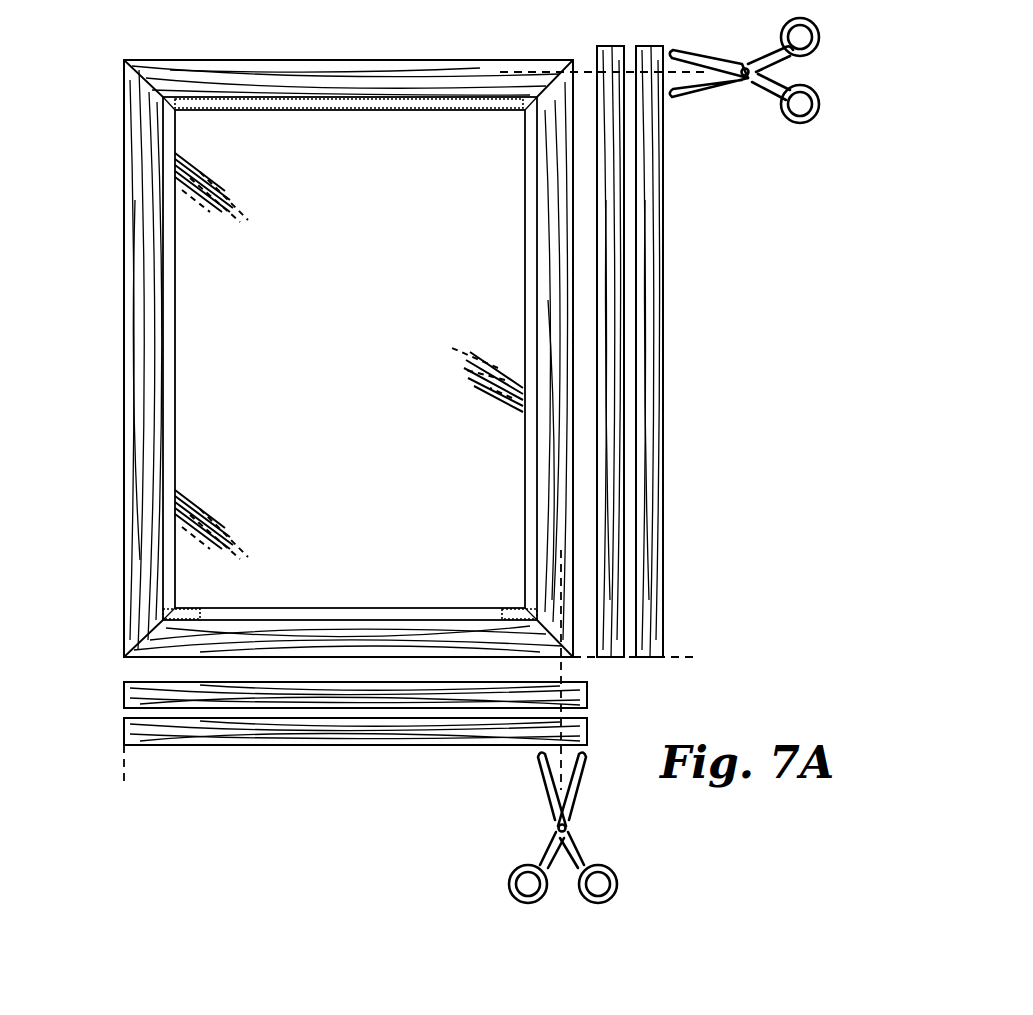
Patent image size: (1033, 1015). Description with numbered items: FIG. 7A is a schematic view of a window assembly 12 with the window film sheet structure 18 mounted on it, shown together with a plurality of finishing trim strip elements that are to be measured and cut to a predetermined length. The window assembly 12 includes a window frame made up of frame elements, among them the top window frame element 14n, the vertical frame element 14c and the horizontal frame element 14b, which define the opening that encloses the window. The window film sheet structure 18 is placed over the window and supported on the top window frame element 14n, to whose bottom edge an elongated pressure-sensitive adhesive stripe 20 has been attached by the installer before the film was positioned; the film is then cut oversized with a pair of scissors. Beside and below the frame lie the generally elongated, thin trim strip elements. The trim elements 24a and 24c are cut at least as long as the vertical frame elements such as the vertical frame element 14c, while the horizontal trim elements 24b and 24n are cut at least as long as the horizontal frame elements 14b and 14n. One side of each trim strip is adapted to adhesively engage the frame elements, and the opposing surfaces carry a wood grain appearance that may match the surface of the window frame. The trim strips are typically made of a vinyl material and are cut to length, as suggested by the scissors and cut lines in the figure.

The window assembly 12 is at (106, 233).
The top window frame element 14n is at (302, 60).
The vertical frame element 14c is at (123, 442).
The horizontal frame element 14b is at (178, 657).
The window film sheet structure 18 is at (352, 407).
The pressure-sensitive adhesive stripe 20 is at (383, 100).
The trim element 24a is at (613, 310).
The trim element 24c is at (652, 370).
The horizontal trim element 24b is at (380, 695).
The horizontal trim element 24n is at (307, 735).